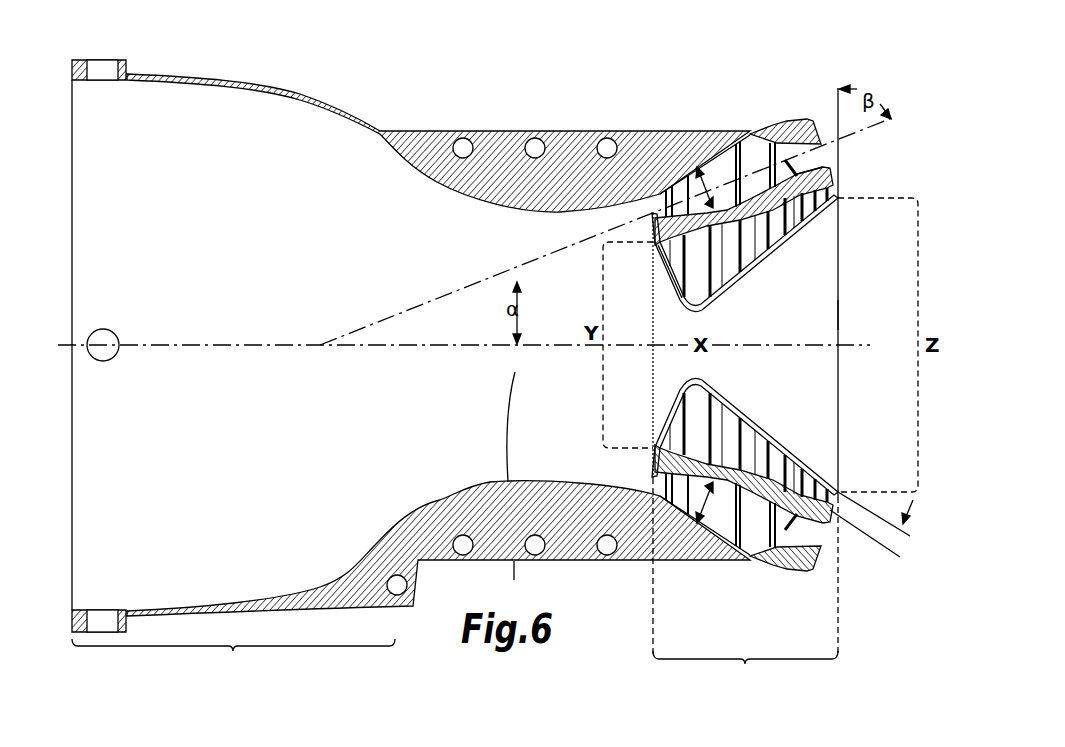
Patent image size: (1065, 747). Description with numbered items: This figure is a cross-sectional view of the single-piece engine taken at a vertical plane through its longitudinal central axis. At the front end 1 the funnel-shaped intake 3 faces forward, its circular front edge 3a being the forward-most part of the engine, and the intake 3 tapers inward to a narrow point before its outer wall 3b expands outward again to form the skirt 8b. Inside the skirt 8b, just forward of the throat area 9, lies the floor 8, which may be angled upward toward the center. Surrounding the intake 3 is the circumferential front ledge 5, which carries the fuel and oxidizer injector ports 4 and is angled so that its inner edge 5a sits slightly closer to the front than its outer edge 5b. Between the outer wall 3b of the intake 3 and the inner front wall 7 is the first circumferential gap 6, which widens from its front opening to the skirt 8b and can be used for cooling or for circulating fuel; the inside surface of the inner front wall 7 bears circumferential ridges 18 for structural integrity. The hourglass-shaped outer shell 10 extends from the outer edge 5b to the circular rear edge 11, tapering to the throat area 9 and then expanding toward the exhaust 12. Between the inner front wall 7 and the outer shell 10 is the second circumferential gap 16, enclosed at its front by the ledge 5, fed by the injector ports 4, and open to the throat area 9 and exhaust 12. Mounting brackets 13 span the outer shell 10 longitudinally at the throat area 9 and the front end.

The front end 1 is at (767, 364).
The funnel-shaped intake 3 is at (830, 365).
The front edge of the intake 3a is at (840, 322).
The outer wall of the intake 3b is at (776, 520).
The fuel and oxidizer injector ports 4 is at (813, 158).
The circumferential front ledge 5 is at (793, 348).
The inner edge of the circumferential front ledge 5a is at (826, 172).
The outer edge of the circumferential front ledge 5b is at (803, 119).
The first circumferential gap 6 is at (880, 559).
The inner front wall 7 is at (730, 447).
The floor 8 is at (672, 292).
The skirt 8b is at (760, 192).
The throat area 9 is at (514, 488).
The outer shell 10 is at (284, 90).
The rear edge 11 is at (71, 108).
The exhaust 12 is at (233, 658).
The mounting brackets 13 is at (438, 317).
The second circumferential gap 16 is at (703, 178).
The circumferential ridges 18 is at (722, 256).